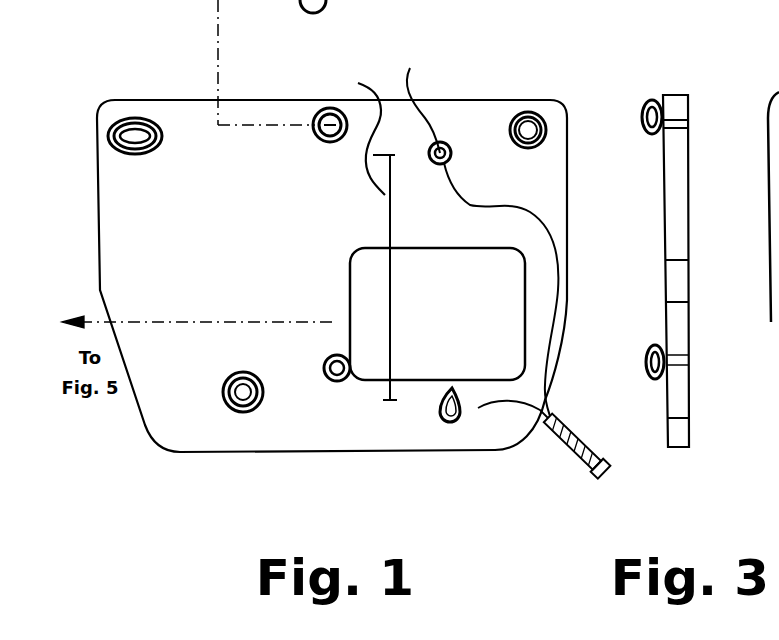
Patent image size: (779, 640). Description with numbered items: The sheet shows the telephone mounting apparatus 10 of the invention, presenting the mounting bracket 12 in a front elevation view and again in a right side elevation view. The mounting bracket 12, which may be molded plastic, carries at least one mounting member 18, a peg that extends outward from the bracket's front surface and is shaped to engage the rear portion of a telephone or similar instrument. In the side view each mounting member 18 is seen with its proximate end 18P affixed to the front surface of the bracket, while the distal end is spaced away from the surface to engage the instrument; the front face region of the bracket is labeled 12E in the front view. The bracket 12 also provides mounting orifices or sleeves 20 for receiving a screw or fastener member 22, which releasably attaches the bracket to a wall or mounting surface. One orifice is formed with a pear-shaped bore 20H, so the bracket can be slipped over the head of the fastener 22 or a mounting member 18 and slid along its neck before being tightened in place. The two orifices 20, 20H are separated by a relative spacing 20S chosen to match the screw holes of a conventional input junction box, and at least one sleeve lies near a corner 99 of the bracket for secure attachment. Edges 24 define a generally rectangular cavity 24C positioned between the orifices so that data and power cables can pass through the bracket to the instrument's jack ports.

In FIG. 1, the telephone mounting apparatus 10 is at (469, 64).
In FIG. 3, the mounting bracket 12 is at (689, 447).
In FIG. 1, the mounting plate 12E is at (234, 248).
In FIG. 1, the mounting member 18 is at (327, 108).
In FIG. 3, the mounting member 18 is at (650, 100).
In FIG. 3, the proximate end 18P is at (665, 125).
In FIG. 1, the mounting orifice 20 is at (133, 120).
In FIG. 1, the relative spacing 20S is at (352, 129).
In FIG. 1, the bore 20H is at (443, 483).
In FIG. 1, the fastener member 22 is at (585, 466).
In FIG. 3, the edges 24 is at (770, 218).
In FIG. 1, the cavity 24C is at (503, 345).
In FIG. 1, the corner 99 is at (548, 147).